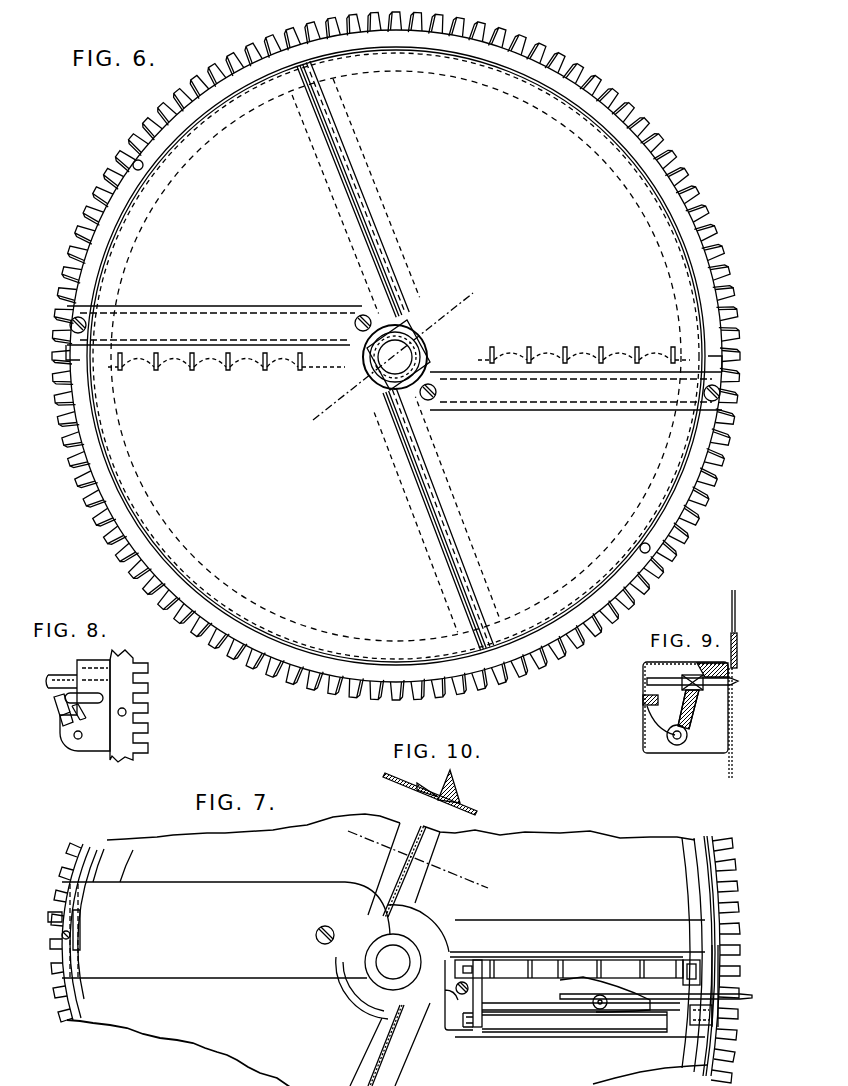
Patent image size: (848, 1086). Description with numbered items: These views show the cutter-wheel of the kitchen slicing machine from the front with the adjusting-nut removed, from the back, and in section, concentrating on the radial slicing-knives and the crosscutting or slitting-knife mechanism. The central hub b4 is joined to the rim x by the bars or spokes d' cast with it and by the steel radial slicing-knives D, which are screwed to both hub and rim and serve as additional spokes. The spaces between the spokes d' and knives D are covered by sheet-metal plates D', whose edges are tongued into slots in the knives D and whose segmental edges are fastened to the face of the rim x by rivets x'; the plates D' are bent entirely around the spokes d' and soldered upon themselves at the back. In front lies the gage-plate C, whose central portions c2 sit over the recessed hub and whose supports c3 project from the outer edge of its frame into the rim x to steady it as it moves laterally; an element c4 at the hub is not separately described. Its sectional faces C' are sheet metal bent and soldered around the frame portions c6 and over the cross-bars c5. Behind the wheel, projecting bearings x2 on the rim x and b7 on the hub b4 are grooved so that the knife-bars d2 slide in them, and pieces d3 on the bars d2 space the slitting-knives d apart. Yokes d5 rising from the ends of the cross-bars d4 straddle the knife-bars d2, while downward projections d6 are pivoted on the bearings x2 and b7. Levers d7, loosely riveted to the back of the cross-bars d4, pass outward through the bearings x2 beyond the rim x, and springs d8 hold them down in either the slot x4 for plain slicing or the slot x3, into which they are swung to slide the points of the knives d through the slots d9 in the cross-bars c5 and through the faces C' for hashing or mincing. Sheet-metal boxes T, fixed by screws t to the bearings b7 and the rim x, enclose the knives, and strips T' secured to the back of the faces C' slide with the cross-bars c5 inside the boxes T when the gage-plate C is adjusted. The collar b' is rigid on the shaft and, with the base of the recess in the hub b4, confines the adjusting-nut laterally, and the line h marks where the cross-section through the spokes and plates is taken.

In FIG. 6, the rim x is at (396, 371).
In FIG. 8, the rim x is at (129, 706).
In FIG. 7, the rim x is at (395, 959).
In FIG. 6, the rivets x' is at (391, 357).
In FIG. 8, the projecting bearing x2 is at (85, 705).
In FIG. 7, the projecting bearing x2 is at (702, 1014).
In FIG. 8, the slot x3 is at (83, 705).
In FIG. 8, the slot x4 is at (54, 710).
In FIG. 6, the gage-plate C is at (395, 357).
In FIG. 7, the gage-plate C is at (393, 962).
In FIG. 6, the sectional faces of gage-plate C' is at (385, 355).
In FIG. 9, the sectional faces of gage-plate C' is at (741, 724).
In FIG. 10, the sectional faces of gage-plate C' is at (373, 773).
In FIG. 7, the sectional faces of gage-plate C' is at (407, 949).
In FIG. 6, the central portions of gage-plate c2 is at (396, 356).
In FIG. 6, the supports c3 is at (390, 358).
In FIG. 6, the hub block c4 is at (388, 421).
In FIG. 6, the cross-bars c5 is at (396, 364).
In FIG. 9, the cross-bars c5 is at (712, 660).
In FIG. 7, the cross-bars c5 is at (653, 956).
In FIG. 10, the frame portions c6 is at (427, 776).
In FIG. 6, the radial slicing-knives D is at (394, 358).
In FIG. 9, the radial slicing-knives D is at (742, 650).
In FIG. 7, the radial slicing-knives D is at (581, 978).
In FIG. 6, the face-plates D' is at (391, 356).
In FIG. 9, the face-plates D' is at (744, 611).
In FIG. 10, the face-plates D' is at (443, 797).
In FIG. 7, the face-plates D' is at (309, 979).
In FIG. 9, the slitting-knives d is at (702, 681).
In FIG. 7, the slitting-knives d is at (559, 938).
In FIG. 6, the bars or spokes d' is at (395, 355).
In FIG. 10, the bars or spokes d' is at (458, 786).
In FIG. 7, the bars or spokes d' is at (395, 954).
In FIG. 9, the knife-bars d2 is at (699, 692).
In FIG. 7, the spacing pieces d3 is at (569, 969).
In FIG. 9, the cross-bars d4 is at (689, 717).
In FIG. 7, the cross-bars d4 is at (581, 998).
In FIG. 8, the yokes d5 is at (55, 672).
In FIG. 7, the yokes d5 is at (482, 978).
In FIG. 7, the downward projections d6 is at (484, 1021).
In FIG. 7, the levers d7 is at (48, 918).
In FIG. 7, the springs d8 is at (605, 994).
In FIG. 6, the slots d9 is at (399, 361).
In FIG. 7, the sheet-metal boxes T is at (226, 930).
In FIG. 9, the sheet-metal strips T' is at (673, 718).
In FIG. 7, the sheet-metal strips T' is at (574, 1022).
In FIG. 9, the screws t is at (642, 700).
In FIG. 7, the screws t is at (198, 941).
In FIG. 9, the collar b' is at (661, 715).
In FIG. 7, the hub b4 is at (392, 962).
In FIG. 7, the projecting bearing b7 is at (456, 970).
In FIG. 7, the section line h is at (409, 867).